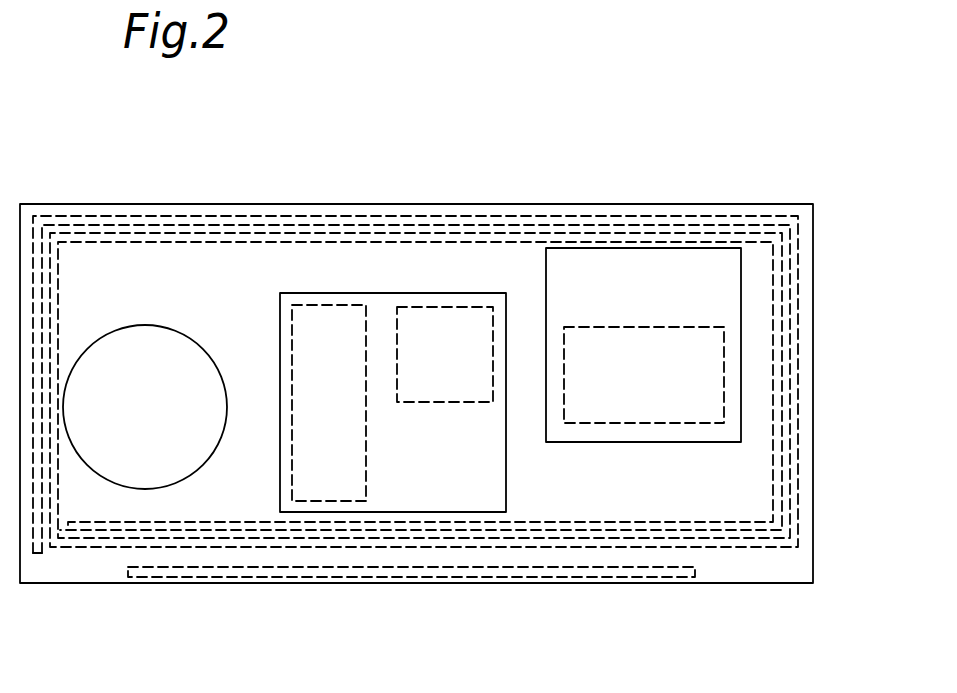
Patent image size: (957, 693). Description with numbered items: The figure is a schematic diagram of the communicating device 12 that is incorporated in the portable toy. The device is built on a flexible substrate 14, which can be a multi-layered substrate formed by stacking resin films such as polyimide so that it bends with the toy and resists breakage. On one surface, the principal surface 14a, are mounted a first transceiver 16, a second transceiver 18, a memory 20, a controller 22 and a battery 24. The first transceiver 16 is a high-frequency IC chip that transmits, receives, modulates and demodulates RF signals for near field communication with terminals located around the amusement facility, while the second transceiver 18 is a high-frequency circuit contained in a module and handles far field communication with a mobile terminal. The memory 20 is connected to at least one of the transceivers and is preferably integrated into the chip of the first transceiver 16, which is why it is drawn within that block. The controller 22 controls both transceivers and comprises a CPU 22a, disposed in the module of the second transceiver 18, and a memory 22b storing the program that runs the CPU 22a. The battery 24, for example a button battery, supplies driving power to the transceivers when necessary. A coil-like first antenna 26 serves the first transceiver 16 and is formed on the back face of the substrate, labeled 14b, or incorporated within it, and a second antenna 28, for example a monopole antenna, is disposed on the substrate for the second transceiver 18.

The communicating device 12 is at (824, 212).
The flexible substrate 14 is at (243, 203).
The principal surface 14a is at (138, 291).
The second main surface of substrate 14b is at (87, 570).
The first transceiver 16 is at (648, 442).
The second transceiver 18 is at (280, 325).
The memory 20 is at (641, 339).
The controller 22 is at (497, 452).
The CPU 22a is at (462, 385).
The memory 22b is at (343, 439).
The battery 24 is at (162, 423).
The first antenna 26 is at (527, 218).
The second antenna 28 is at (422, 567).